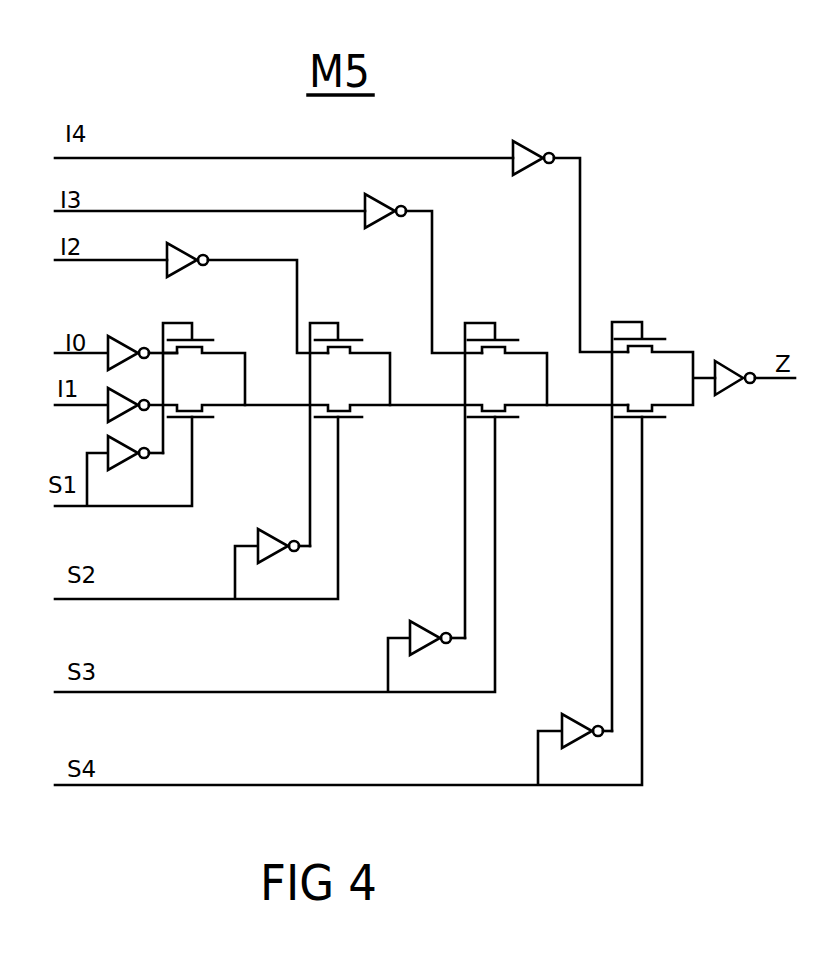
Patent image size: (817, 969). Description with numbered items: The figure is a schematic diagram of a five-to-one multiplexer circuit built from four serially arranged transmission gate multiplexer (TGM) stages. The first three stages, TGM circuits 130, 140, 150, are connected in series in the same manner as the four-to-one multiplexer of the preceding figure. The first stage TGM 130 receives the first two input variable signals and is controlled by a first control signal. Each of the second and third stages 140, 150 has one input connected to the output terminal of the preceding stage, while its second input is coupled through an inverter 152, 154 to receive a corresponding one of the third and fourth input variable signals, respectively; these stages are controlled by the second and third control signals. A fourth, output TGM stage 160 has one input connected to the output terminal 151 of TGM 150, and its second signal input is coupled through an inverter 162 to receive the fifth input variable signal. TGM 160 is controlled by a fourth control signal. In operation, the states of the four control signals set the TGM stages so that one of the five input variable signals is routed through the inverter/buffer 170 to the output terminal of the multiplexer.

The first stage TGM circuit 130 is at (215, 382).
The second stage TGM circuit 140 is at (345, 385).
The third stage TGM circuit 150 is at (508, 372).
The output terminal 151 is at (593, 405).
The inverter 152 is at (183, 256).
The inverter 154 is at (373, 210).
The fourth (output) TGM stage 160 is at (655, 372).
The inverter 162 is at (527, 155).
The inverter/buffer 170 is at (730, 375).